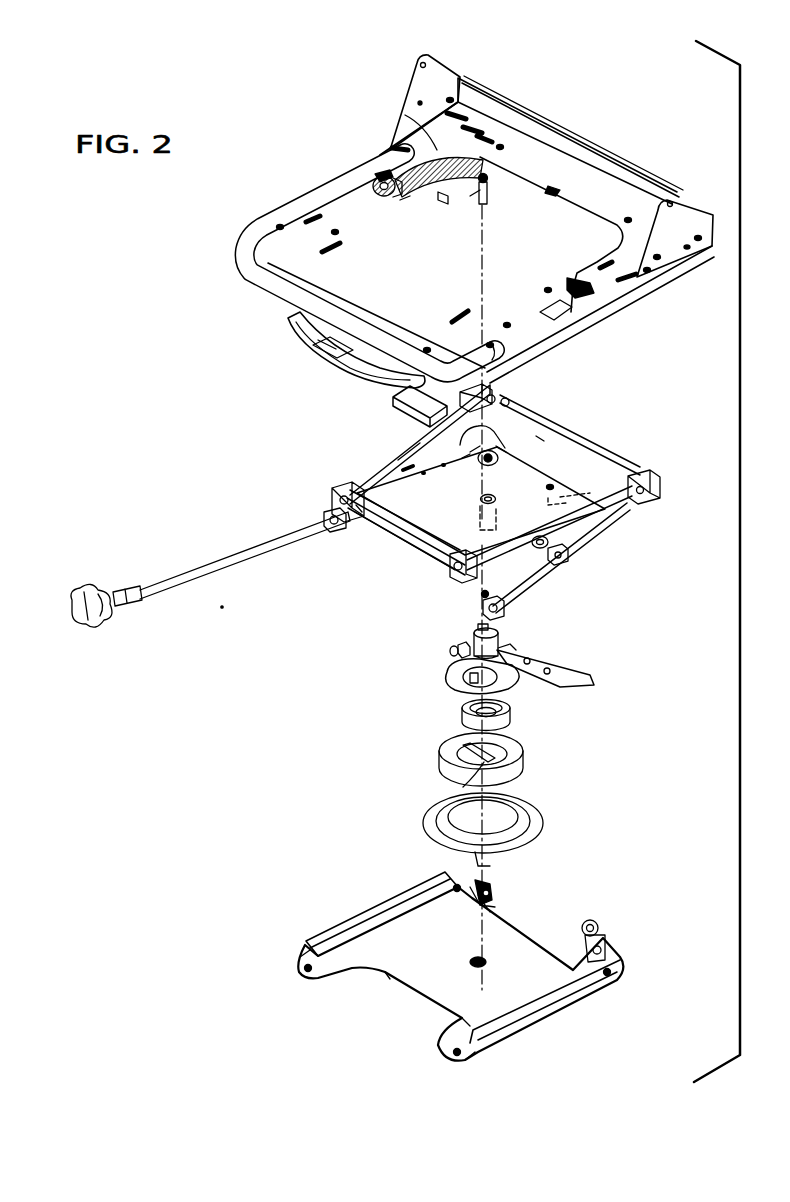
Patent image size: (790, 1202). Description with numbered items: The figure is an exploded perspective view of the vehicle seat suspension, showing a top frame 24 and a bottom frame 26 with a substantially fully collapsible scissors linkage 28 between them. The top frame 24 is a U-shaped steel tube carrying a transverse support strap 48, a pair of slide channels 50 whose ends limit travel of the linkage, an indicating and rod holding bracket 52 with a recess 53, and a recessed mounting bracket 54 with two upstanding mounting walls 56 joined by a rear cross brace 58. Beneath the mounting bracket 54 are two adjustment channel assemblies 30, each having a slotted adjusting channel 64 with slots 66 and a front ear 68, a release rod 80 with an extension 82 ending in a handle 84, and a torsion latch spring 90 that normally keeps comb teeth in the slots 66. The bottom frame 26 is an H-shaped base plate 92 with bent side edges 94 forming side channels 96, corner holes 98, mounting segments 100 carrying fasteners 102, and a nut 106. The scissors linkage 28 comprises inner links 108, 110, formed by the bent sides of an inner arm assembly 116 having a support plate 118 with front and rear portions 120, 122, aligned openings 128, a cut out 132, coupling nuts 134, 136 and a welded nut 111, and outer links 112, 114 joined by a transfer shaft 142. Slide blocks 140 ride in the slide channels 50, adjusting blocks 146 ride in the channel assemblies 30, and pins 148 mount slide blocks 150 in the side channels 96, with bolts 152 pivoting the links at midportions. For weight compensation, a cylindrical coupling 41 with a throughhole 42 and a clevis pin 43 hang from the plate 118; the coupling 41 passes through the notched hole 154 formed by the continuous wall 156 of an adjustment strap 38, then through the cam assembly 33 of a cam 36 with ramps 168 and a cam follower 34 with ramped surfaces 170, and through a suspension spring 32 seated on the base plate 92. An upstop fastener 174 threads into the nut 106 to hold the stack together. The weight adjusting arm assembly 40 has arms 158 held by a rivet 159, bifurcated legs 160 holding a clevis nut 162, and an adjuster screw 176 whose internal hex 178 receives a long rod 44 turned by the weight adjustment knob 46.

The top frame 24 is at (660, 298).
The bottom frame 26 is at (625, 995).
The scissors linkage 28 is at (650, 525).
The adjustment channel assemblies 30 is at (439, 196).
The suspension spring 32 is at (540, 827).
The cam assembly 33 is at (432, 704).
The cam follower 34 is at (522, 768).
The cam 36 is at (511, 715).
The adjustment paddle or strap 38 is at (522, 690).
The weight adjusting arm assembly 40 is at (580, 662).
The cylindrical coupling 41 is at (478, 518).
The throughhole 42 is at (494, 498).
The clevis pin 43 is at (583, 498).
The long rod 44 is at (243, 548).
The weight adjustment knob 46 is at (95, 635).
The transverse support strap 48 is at (398, 281).
The slide channels 50 is at (284, 243).
The indicating and rod holding bracket 52 is at (345, 380).
The recess 53 is at (309, 347).
The mounting bracket 54 is at (520, 175).
The mounting walls 56 is at (446, 72).
The rear cross brace 58 is at (570, 137).
The adjusting channel 64 is at (440, 148).
The slots 66 is at (474, 200).
The front ear 68 is at (405, 202).
The release rod 80 is at (376, 176).
The extension 82 is at (544, 312).
The handle 84 is at (394, 390).
The torsion latch spring 90 is at (380, 178).
The base plate 92 is at (393, 972).
The bent side edges 94 is at (357, 917).
The side channels 96 is at (303, 951).
The holes 98 is at (456, 884).
The mounting segments 100 is at (494, 870).
The fasteners 102 is at (483, 891).
The nut 106 is at (468, 962).
The inner link 108 is at (526, 590).
The inner link 110 is at (480, 420).
The nut 111 is at (520, 406).
The outer link 112 is at (587, 526).
The outer link 114 is at (440, 437).
The inner arm assembly 116 is at (410, 583).
The support plate 118 is at (392, 523).
The front portion 120 is at (426, 578).
The rear portion 122 is at (523, 468).
The aligned openings 128 is at (360, 528).
The cut out 132 is at (465, 463).
The coupling nut 134 is at (546, 540).
The coupling nut 136 is at (400, 460).
The slide blocks 140 is at (344, 494).
The transfer shaft 142 is at (570, 432).
The adjusting blocks 146 is at (506, 388).
The pins 148 is at (360, 520).
The slide blocks 150 is at (337, 520).
The bolt 152 is at (565, 557).
The notched hole 154 is at (463, 692).
The continuous wall 156 is at (470, 673).
The arms 158 is at (597, 678).
The rivet 159 is at (512, 646).
The bifurcated legs 160 is at (502, 637).
The clevis nut 162 is at (476, 637).
The inclined wedges or ramps 168 is at (498, 736).
The ramped surfaces 170 is at (466, 789).
The upstop or fastener 174 is at (500, 178).
The adjuster screw 176 is at (458, 643).
The internal hex 178 is at (450, 651).